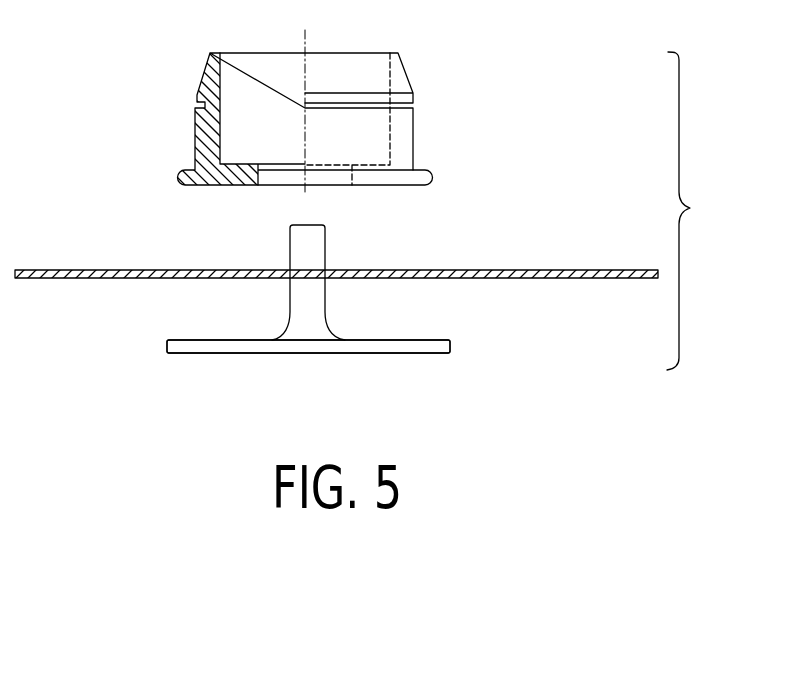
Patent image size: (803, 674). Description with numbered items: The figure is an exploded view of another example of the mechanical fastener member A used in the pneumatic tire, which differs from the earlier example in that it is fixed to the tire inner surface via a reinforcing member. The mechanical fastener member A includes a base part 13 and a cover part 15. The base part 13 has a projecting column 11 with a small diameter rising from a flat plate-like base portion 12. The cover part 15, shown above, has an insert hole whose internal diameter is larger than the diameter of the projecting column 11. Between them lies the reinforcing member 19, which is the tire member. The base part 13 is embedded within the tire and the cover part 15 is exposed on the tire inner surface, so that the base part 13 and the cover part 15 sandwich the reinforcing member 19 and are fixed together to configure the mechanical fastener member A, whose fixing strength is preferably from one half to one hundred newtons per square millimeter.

The projecting column 11 is at (318, 303).
The flat plate-like base portion 12 is at (373, 348).
The base part 13 is at (458, 350).
The cover part 15 is at (418, 68).
The reinforcing member 19 is at (98, 270).
The mechanical fastener member A is at (690, 211).